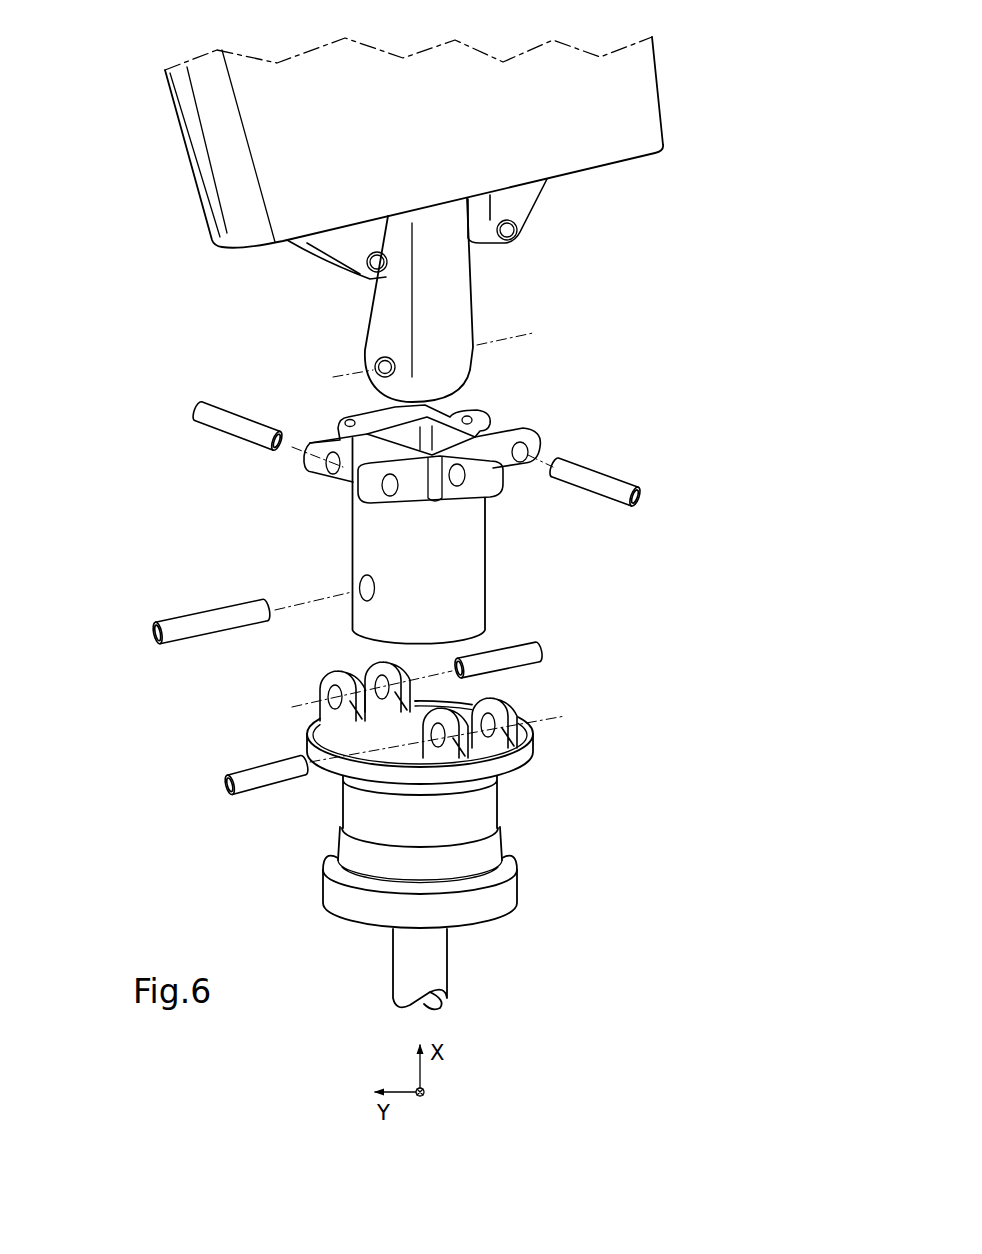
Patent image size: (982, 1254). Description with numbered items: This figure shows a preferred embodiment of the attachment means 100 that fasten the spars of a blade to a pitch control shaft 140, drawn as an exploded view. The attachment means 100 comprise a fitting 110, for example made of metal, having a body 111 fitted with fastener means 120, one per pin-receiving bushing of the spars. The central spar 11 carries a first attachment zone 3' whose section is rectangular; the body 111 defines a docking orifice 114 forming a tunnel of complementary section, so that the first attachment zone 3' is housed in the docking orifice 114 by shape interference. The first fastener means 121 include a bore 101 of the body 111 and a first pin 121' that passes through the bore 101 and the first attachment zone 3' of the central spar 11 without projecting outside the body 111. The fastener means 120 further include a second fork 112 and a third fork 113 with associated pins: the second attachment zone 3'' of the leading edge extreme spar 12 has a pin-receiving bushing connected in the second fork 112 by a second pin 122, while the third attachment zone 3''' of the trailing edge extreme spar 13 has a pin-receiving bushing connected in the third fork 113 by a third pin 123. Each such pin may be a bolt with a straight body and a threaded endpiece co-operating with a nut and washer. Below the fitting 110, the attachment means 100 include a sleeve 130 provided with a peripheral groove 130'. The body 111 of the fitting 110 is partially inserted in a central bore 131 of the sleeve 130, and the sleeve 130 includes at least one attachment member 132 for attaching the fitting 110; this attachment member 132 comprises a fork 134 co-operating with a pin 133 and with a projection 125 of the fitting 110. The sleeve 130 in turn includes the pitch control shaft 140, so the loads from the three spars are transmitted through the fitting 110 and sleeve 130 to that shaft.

The first attachment zone 3' is at (452, 300).
The second attachment zone 3'' is at (356, 305).
The third attachment zone 3''' is at (560, 237).
The central spar 11 is at (499, 350).
The leading edge extreme spar 12 is at (337, 250).
The trailing edge extreme spar 13 is at (523, 203).
The attachment means 100 is at (729, 433).
The bore 101 is at (363, 593).
The fitting 110 is at (493, 587).
The body 111 is at (340, 533).
The second fork 112 is at (292, 490).
The third fork 113 is at (519, 415).
The docking orifice 114 is at (428, 441).
The fastener means 120 is at (102, 642).
The first fastener means 121 is at (204, 594).
The first pin 121' is at (125, 659).
The second pin 122 is at (195, 407).
The third pin 123 is at (624, 474).
The projection 125 is at (330, 408).
The sleeve 130 is at (466, 818).
The peripheral groove 130' is at (364, 890).
The central bore 131 is at (402, 729).
The attachment member 132 is at (564, 692).
The pin 133 is at (550, 648).
The fork 134 is at (314, 697).
The pitch control shaft 140 is at (452, 960).